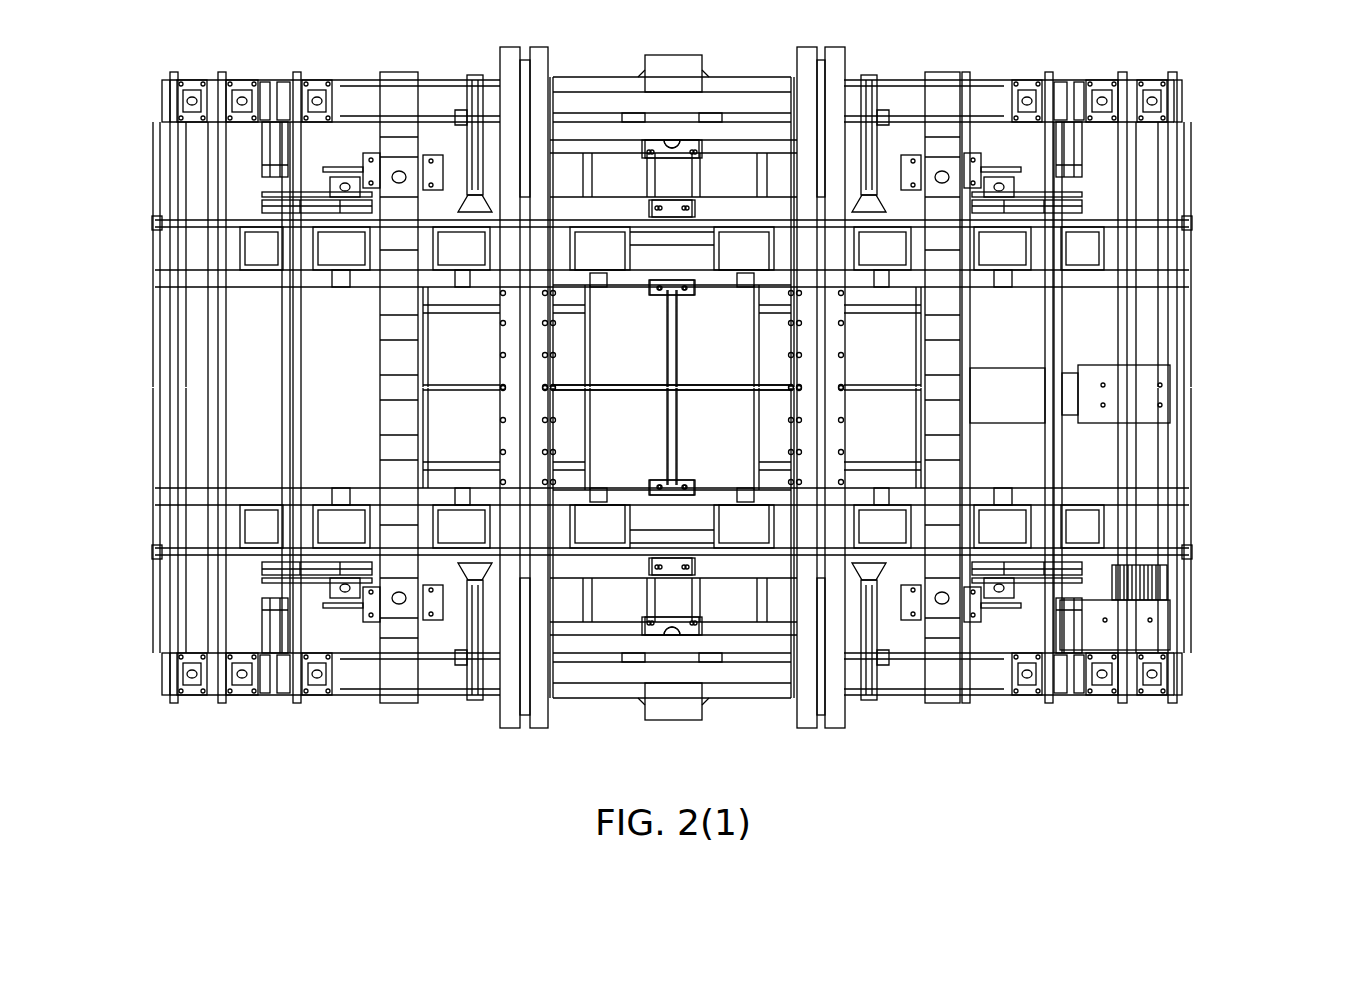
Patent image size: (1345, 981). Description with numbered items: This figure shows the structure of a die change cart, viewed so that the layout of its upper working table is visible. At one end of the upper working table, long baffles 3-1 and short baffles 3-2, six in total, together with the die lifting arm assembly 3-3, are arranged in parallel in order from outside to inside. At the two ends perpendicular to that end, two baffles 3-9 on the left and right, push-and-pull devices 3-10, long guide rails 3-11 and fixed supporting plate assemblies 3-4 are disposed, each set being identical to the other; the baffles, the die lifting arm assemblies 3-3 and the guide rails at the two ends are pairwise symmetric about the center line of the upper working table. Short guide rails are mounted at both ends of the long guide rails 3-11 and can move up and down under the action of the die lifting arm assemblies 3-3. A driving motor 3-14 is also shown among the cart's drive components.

The long baffle 3-1 is at (298, 203).
The short baffle 3-2 is at (288, 366).
The die lifting arm assembly 3-3 is at (397, 385).
The fixed supporting plate assembly 3-4 is at (473, 238).
The baffle on the left or right 3-9 is at (745, 193).
The push-and-pull device 3-10 is at (678, 100).
The long guide rail 3-11 is at (508, 433).
The driving motor 3-14 is at (1017, 398).